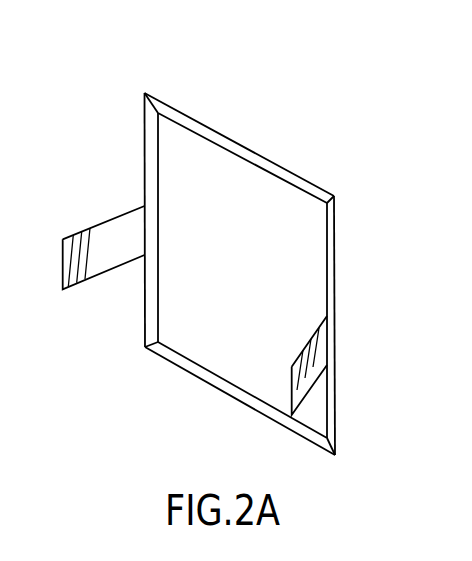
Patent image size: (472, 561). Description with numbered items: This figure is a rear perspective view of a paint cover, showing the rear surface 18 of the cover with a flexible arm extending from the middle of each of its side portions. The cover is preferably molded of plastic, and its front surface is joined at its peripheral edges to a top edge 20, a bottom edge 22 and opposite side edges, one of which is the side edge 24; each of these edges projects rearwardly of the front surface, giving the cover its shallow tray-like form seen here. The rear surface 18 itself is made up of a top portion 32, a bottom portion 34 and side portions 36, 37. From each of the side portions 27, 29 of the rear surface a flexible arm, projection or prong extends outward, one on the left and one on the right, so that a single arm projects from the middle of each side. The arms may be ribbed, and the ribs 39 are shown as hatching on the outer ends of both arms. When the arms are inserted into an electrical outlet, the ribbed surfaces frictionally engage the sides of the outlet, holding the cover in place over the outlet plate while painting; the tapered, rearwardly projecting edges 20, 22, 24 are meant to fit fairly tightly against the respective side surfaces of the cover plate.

The rear surface 18 is at (202, 407).
The top edge 20 is at (285, 175).
The bottom edge 22 is at (250, 398).
The side edge 24 is at (333, 243).
The side portion 27 is at (325, 338).
The side portion 29 is at (115, 245).
The top portion 32 is at (230, 162).
The bottom portion 34 is at (202, 320).
The side portion 36 is at (273, 283).
The side portion 37 is at (165, 232).
The ribs 39 is at (83, 255).